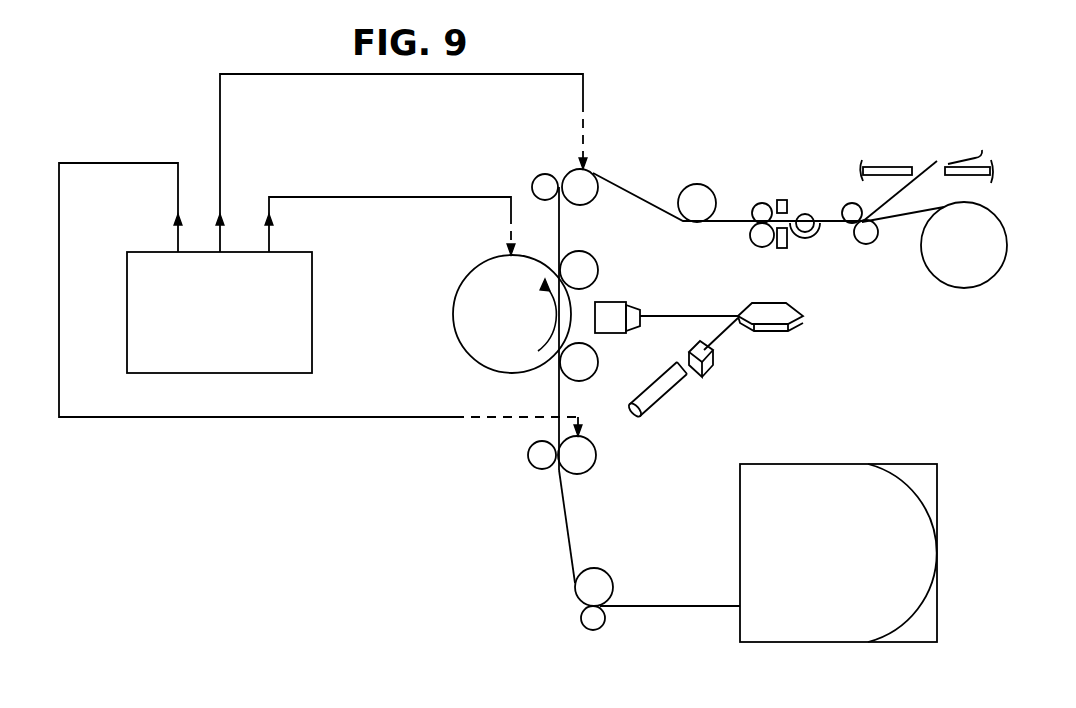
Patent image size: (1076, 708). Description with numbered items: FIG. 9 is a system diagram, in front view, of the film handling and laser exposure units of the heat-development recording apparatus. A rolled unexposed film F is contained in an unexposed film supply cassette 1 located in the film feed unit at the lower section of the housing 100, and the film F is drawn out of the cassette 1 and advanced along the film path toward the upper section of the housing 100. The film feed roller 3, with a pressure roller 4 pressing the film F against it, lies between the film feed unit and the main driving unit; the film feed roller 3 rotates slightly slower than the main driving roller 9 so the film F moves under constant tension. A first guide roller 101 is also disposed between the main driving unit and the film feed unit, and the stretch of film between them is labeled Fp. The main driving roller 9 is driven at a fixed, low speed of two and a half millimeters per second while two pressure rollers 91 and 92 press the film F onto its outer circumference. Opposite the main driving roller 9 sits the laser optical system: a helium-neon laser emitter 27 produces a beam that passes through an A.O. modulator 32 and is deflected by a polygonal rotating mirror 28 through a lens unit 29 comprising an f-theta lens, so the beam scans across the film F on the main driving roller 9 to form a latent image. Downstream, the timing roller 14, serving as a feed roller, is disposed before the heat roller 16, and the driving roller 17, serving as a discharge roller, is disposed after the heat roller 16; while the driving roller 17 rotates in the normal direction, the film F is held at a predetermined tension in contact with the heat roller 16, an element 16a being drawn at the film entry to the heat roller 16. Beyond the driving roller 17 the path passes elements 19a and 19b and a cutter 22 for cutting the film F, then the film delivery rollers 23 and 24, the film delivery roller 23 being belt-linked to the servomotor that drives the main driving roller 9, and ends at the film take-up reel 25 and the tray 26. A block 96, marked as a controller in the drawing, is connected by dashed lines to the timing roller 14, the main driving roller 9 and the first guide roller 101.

The unexposed film supply cassette 1 is at (932, 651).
The film feed roller 3 is at (600, 583).
The pressure roller 4 is at (593, 621).
The main driving roller 9 is at (483, 348).
The timing roller 14 is at (559, 170).
The heat roller 16 is at (699, 182).
The film path segment 16a is at (678, 205).
The driving roller 17 is at (744, 235).
The upper guide member 19a is at (777, 205).
The lower guide member 19b is at (782, 249).
The cutter 22 is at (823, 236).
The film delivery roller 23 is at (867, 235).
The film delivery roller 24 is at (850, 205).
The film take-up reel 25 is at (982, 263).
The tray 26 is at (978, 154).
The helium-neon laser emitter 27 is at (656, 395).
The polygonal rotating mirror 28 is at (802, 325).
The lens unit 29 is at (613, 323).
The A.O. modulator 32 is at (712, 373).
The pressure roller 91 is at (578, 368).
The pressure roller 92 is at (579, 266).
The controller 96 is at (312, 317).
The housing 100 is at (995, 163).
The first guide roller 101 is at (548, 470).
The film F is at (690, 610).
The processed film Fp is at (556, 525).